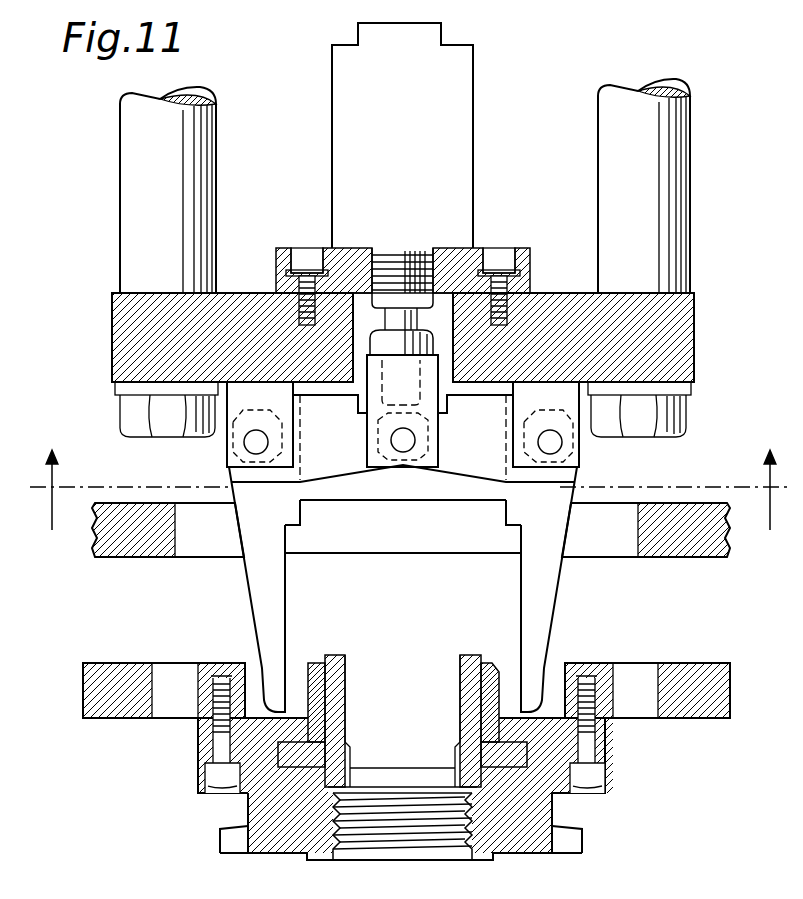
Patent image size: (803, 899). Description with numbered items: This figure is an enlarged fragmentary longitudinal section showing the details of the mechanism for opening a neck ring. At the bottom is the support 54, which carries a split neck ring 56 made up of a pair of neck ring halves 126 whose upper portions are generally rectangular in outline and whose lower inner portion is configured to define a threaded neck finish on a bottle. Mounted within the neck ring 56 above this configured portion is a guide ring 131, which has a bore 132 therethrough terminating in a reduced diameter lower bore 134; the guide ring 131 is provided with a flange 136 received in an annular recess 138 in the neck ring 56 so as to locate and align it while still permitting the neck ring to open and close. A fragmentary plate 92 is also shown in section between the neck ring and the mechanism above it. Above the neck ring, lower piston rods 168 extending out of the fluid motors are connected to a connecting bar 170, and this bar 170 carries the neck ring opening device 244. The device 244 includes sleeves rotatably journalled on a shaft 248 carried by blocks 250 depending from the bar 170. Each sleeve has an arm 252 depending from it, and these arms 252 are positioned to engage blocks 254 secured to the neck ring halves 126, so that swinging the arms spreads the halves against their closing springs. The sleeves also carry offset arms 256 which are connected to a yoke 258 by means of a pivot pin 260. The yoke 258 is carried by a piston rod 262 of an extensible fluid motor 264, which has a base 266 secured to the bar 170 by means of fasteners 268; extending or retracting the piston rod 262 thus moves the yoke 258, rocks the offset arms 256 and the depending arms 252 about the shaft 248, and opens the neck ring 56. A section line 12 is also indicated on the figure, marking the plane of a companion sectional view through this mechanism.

The section line 12- 12 is at (410, 479).
The support 54 is at (105, 698).
The split neck ring 56 is at (550, 850).
The support plate 92 is at (136, 553).
The neck ring half 126 is at (281, 836).
The guide ring 131 is at (482, 660).
The bore 132 is at (368, 685).
The reduced diameter lower bore 134 is at (392, 778).
The flange 136 is at (531, 792).
The annular recess 138 is at (246, 795).
The piston rod 168 is at (135, 166).
The connecting bar 170 is at (681, 320).
The neck ring opening device 244 is at (550, 232).
The shaft 248 is at (256, 443).
The block 250 is at (237, 387).
The arm 252 is at (263, 594).
The block 254 is at (220, 672).
The offset arm 256 is at (345, 462).
The yoke 258 is at (431, 368).
The pivot pin 260 is at (402, 443).
The piston rod 262 is at (397, 313).
The extensible fluid motor 264 is at (416, 141).
The base 266 is at (351, 262).
The fastener 268 is at (307, 262).